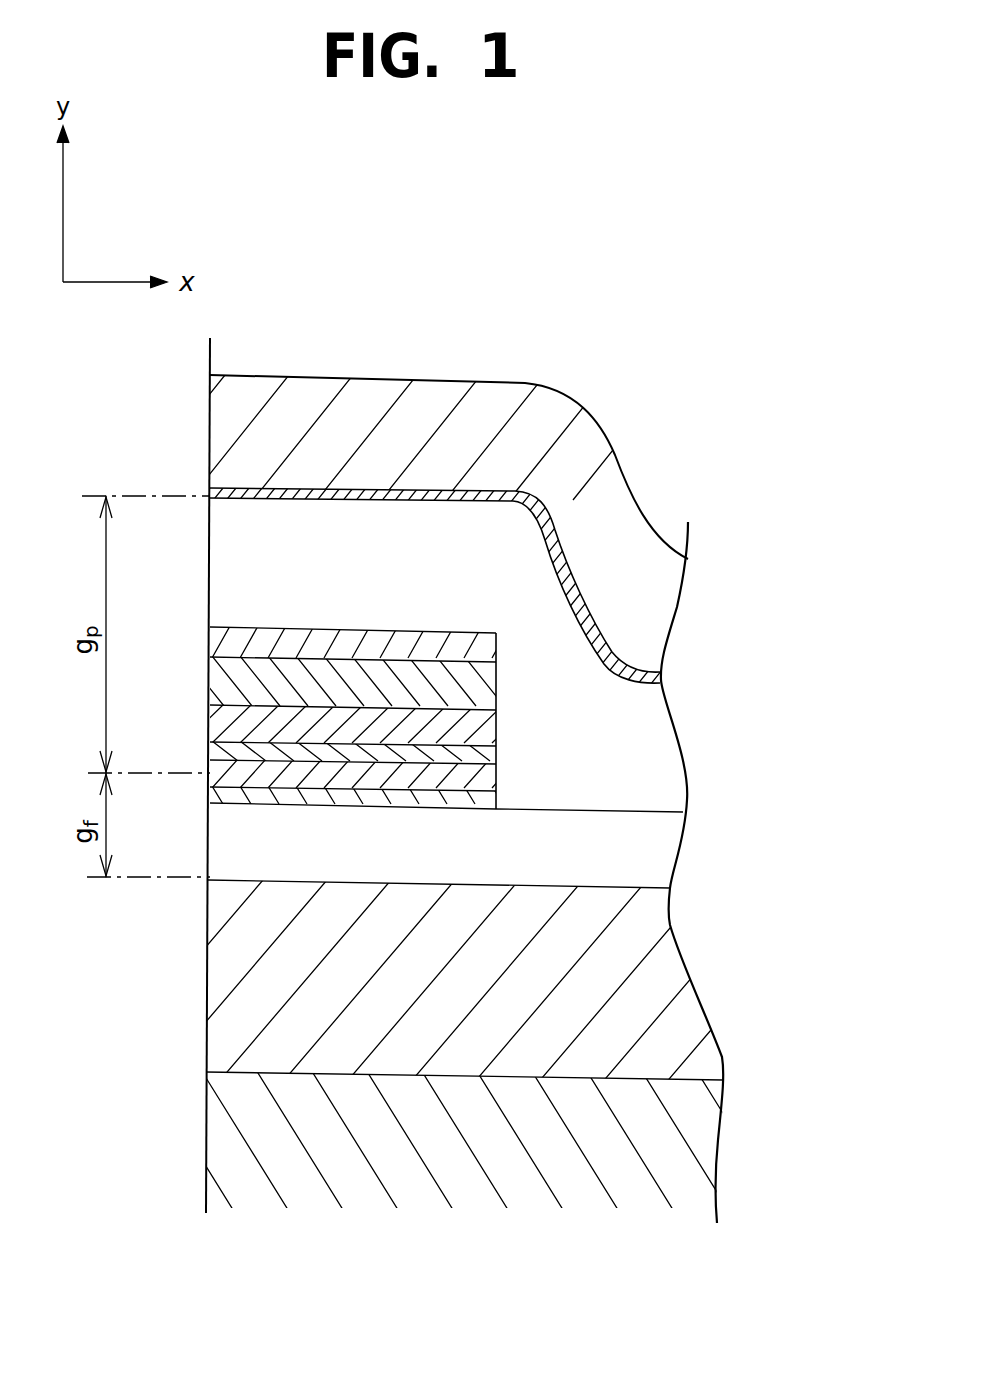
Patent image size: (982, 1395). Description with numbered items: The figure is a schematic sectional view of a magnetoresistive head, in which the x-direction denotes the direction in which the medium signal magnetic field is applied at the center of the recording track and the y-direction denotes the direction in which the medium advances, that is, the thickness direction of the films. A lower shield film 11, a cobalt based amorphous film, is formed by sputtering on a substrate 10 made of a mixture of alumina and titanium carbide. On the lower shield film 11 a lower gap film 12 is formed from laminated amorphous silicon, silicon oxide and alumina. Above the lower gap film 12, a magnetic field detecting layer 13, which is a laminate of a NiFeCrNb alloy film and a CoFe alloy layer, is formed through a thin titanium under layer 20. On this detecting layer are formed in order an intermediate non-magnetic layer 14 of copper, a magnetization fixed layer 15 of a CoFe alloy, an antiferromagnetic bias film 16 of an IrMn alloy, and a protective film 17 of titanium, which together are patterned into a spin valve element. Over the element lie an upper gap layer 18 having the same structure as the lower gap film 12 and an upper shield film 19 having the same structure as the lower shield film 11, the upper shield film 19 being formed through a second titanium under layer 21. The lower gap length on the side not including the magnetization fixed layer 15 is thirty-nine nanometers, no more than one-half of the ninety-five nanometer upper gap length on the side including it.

The substrate 10 is at (233, 1148).
The lower shield film 11 is at (233, 988).
The lower gap film 12 is at (233, 843).
The magnetic field detecting layer 13 is at (498, 773).
The intermediate non-magnetic layer 14 is at (498, 755).
The magnetization fixed layer 15 is at (498, 727).
The antiferromagnetic bias film 16 is at (498, 690).
The protective film 17 is at (498, 643).
The upper gap layer 18 is at (233, 568).
The upper shield film 19 is at (232, 425).
The titanium under layer 20 is at (498, 797).
The titanium under layer 21 is at (410, 499).